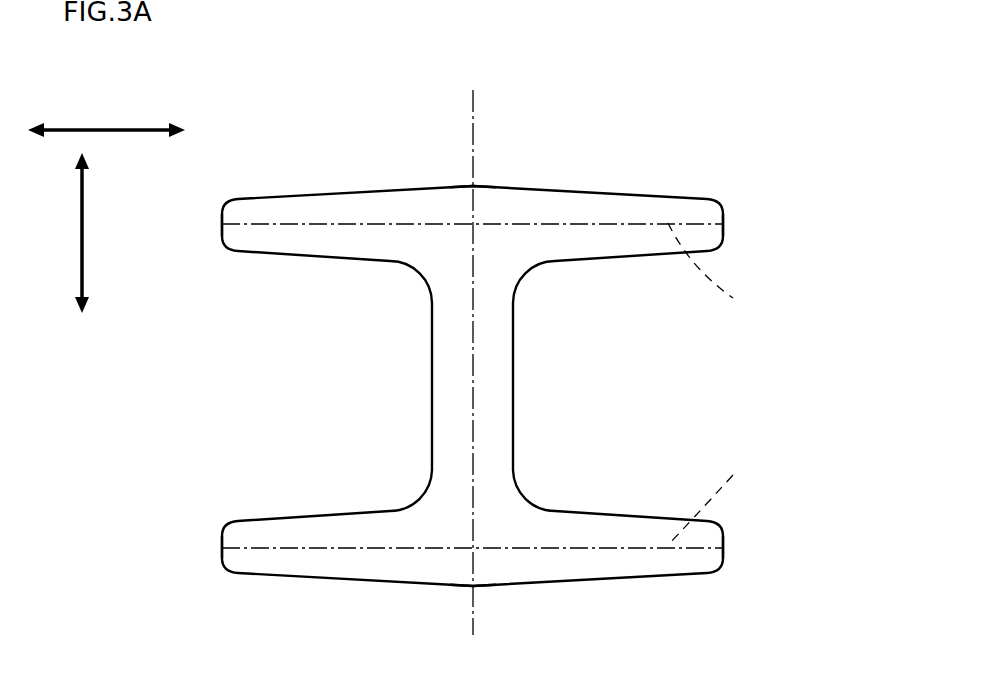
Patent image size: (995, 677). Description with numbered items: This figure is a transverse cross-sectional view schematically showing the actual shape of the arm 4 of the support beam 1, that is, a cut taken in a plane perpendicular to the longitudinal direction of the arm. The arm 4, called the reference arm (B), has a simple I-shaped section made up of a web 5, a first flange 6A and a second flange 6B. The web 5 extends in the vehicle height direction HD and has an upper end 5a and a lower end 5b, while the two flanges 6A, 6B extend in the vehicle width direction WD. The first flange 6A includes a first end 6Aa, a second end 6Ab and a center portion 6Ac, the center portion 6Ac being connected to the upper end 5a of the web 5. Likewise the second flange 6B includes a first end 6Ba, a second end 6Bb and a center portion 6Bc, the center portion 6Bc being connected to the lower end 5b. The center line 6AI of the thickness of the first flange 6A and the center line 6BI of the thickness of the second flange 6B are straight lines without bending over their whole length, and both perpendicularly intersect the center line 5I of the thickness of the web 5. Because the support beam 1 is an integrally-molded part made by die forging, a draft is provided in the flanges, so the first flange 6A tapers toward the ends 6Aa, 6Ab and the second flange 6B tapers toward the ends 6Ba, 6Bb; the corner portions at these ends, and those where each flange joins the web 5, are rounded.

The support beam 1 is at (163, 71).
The arm 4 is at (750, 148).
The web 5 is at (431, 380).
The upper end 5a is at (438, 273).
The lower end 5b is at (438, 499).
The center line 5I is at (470, 347).
The first flange 6A is at (727, 212).
The first end 6Aa is at (723, 230).
The second end 6Ab is at (222, 228).
The center portion 6Ac is at (478, 192).
The center line 6AI is at (713, 276).
The second flange 6B is at (728, 557).
The first end 6Ba is at (723, 540).
The second end 6Bb is at (222, 540).
The center portion 6Bc is at (476, 585).
The center line 6BI is at (713, 498).